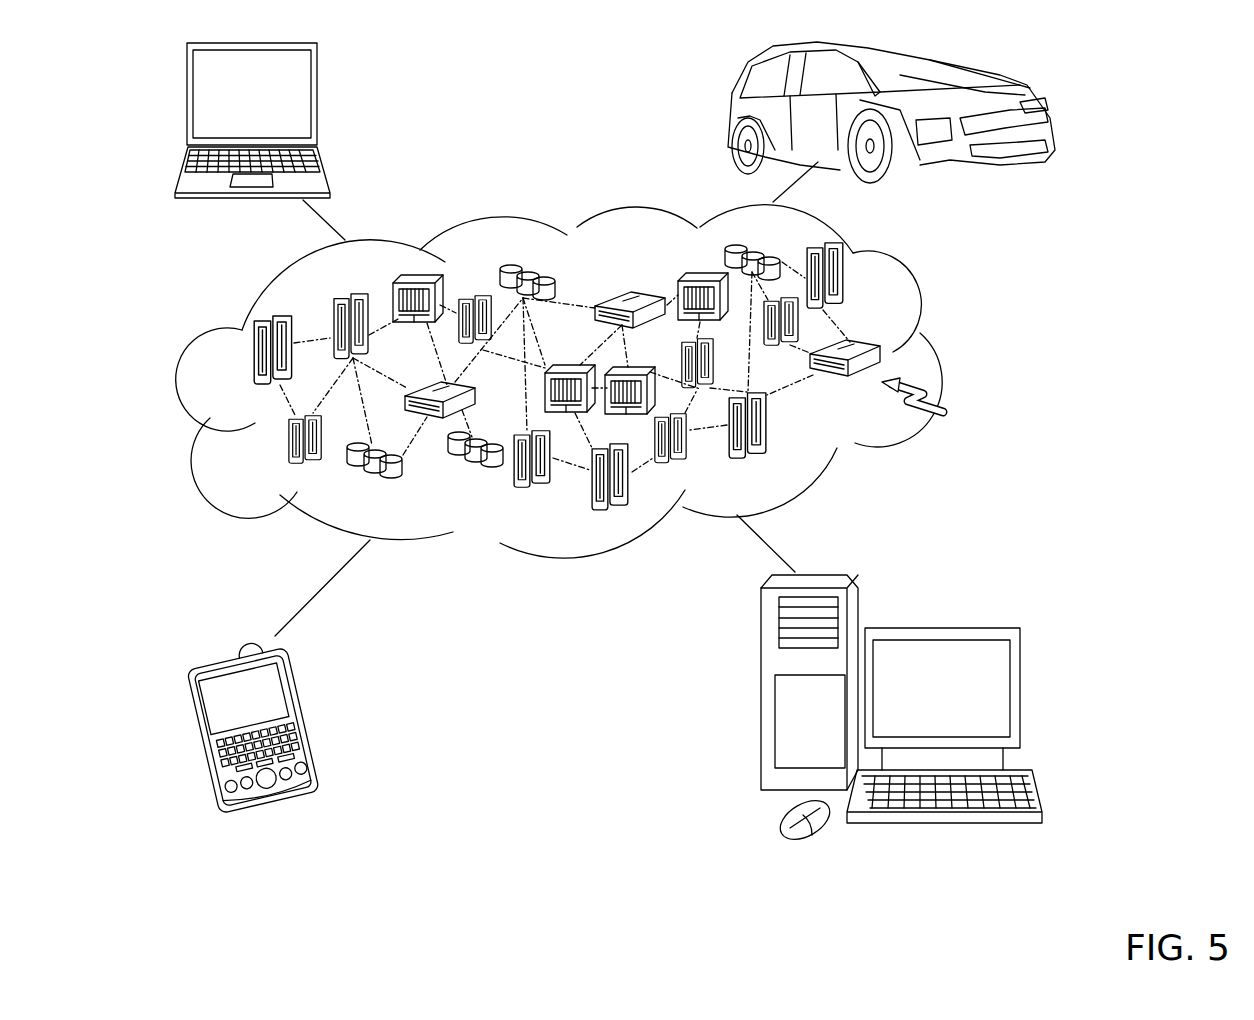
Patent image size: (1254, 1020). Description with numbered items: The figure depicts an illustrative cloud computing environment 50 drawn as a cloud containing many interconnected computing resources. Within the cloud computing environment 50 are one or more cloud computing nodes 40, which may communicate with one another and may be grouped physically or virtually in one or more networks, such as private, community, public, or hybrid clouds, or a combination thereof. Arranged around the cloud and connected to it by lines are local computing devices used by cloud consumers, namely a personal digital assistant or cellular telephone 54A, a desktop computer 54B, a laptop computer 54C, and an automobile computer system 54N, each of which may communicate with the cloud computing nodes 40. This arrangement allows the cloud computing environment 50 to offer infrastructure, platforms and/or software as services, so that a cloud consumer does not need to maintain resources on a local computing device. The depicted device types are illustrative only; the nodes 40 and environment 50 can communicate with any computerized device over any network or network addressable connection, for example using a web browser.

The cloud computing environment 50 is at (938, 354).
The cloud computing nodes 40 is at (930, 404).
The personal digital assistant (PDA) or cellular telephone 54A is at (312, 718).
The desktop computer 54B is at (939, 628).
The laptop computer 54C is at (317, 100).
The automobile computer system 54N is at (730, 110).